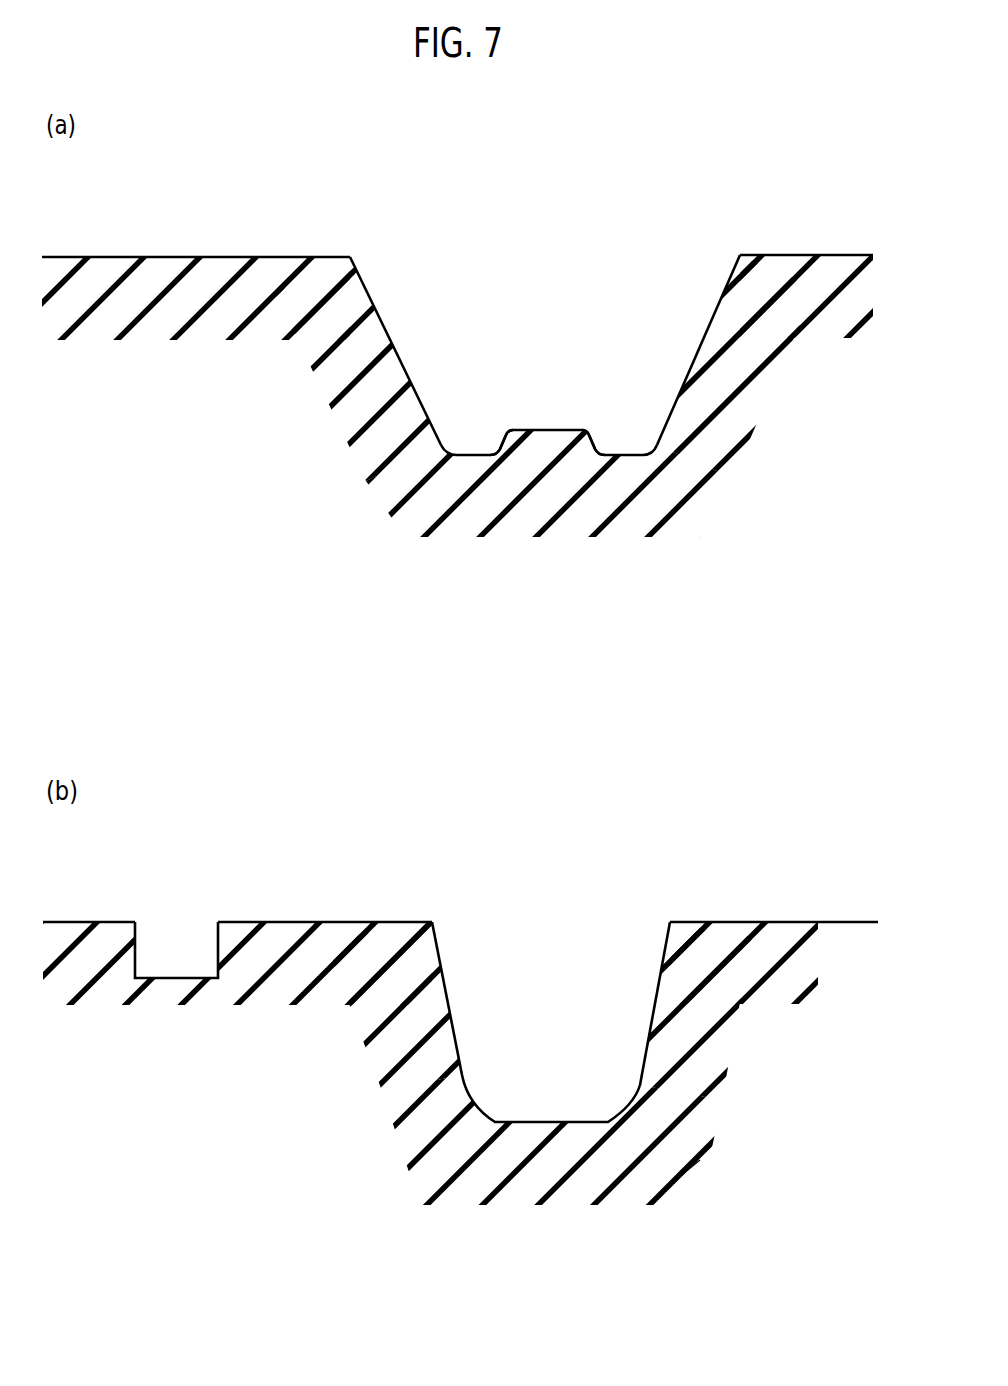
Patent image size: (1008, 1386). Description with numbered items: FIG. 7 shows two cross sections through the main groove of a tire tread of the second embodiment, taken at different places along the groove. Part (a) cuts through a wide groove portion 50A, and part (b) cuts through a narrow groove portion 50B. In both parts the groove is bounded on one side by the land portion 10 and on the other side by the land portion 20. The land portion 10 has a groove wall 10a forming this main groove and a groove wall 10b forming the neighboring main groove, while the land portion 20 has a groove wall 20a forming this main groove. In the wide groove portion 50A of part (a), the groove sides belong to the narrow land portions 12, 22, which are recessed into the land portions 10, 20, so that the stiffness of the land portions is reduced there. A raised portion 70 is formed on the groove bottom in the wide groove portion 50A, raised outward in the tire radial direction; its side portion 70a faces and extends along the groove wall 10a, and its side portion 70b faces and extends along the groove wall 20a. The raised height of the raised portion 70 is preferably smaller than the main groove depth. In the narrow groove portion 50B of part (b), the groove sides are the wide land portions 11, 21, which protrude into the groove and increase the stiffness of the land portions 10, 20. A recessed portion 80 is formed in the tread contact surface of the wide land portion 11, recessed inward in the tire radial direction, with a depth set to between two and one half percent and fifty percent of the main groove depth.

The land portion 10 is at (504, 724).
The narrow land portion 12 is at (216, 266).
The wide land portion 11 is at (343, 930).
The groove wall 10a is at (373, 277).
The groove wall 10b is at (728, 290).
The land portion 20 is at (504, 723).
The narrow land portion 22 is at (829, 266).
The wide land portion 21 is at (745, 932).
The groove wall 20a is at (662, 952).
The wide groove portion 50A is at (560, 226).
The narrow groove portion 50B is at (550, 918).
The raised portion 70 is at (548, 428).
The side portion 70a is at (491, 446).
The side portion 70b is at (605, 445).
The recessed portion 80 is at (175, 940).